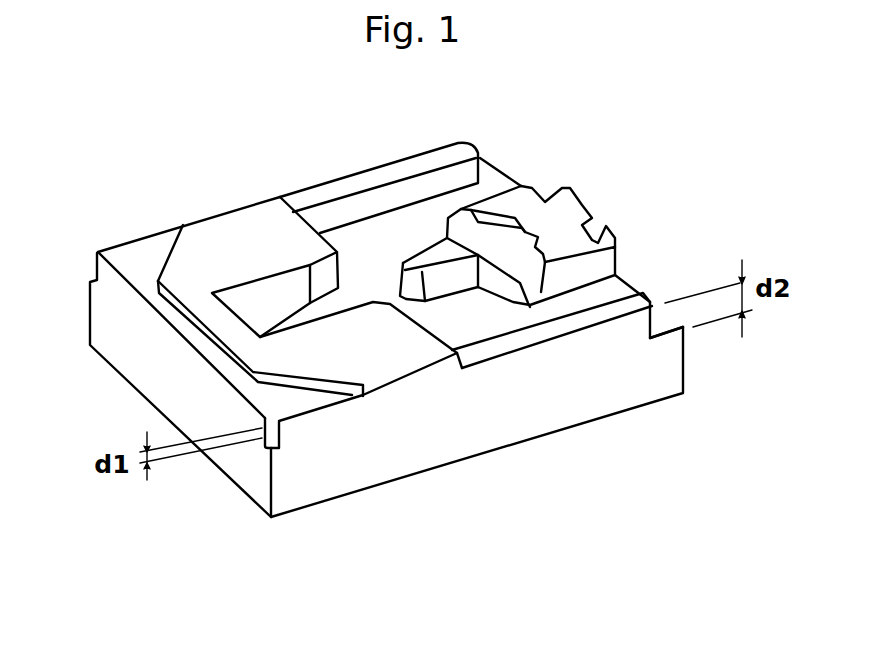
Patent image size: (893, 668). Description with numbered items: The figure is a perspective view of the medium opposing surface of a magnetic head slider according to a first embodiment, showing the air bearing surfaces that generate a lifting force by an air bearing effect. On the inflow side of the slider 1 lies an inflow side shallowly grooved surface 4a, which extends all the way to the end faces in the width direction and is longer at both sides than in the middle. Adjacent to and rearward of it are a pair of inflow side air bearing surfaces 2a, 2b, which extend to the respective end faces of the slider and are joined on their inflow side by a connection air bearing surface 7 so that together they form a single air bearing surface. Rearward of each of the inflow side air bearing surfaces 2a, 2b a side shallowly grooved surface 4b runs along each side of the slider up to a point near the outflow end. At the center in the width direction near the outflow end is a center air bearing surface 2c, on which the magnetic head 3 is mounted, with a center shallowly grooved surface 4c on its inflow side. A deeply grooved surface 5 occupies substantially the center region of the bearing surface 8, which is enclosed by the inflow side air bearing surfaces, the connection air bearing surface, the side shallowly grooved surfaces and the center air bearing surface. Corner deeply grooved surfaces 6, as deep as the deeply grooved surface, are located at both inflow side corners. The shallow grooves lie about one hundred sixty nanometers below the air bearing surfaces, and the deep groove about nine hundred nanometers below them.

The slider 1 is at (160, 414).
The inflow side air bearing surface 2a is at (242, 233).
The inflow side air bearing surface 2b is at (383, 342).
The center air bearing surface 2c is at (547, 217).
The magnetic head 3 is at (578, 204).
The inflow side shallowly grooved surface 4a is at (141, 261).
The side shallowly grooved surface 4b is at (332, 187).
The center shallowly grooved surface 4c is at (512, 262).
The deeply grooved surface 5 is at (407, 237).
The corner deeply grooved surface 6 is at (94, 278).
The connection air bearing surface 7 is at (220, 323).
The bearing surface 8 is at (212, 218).